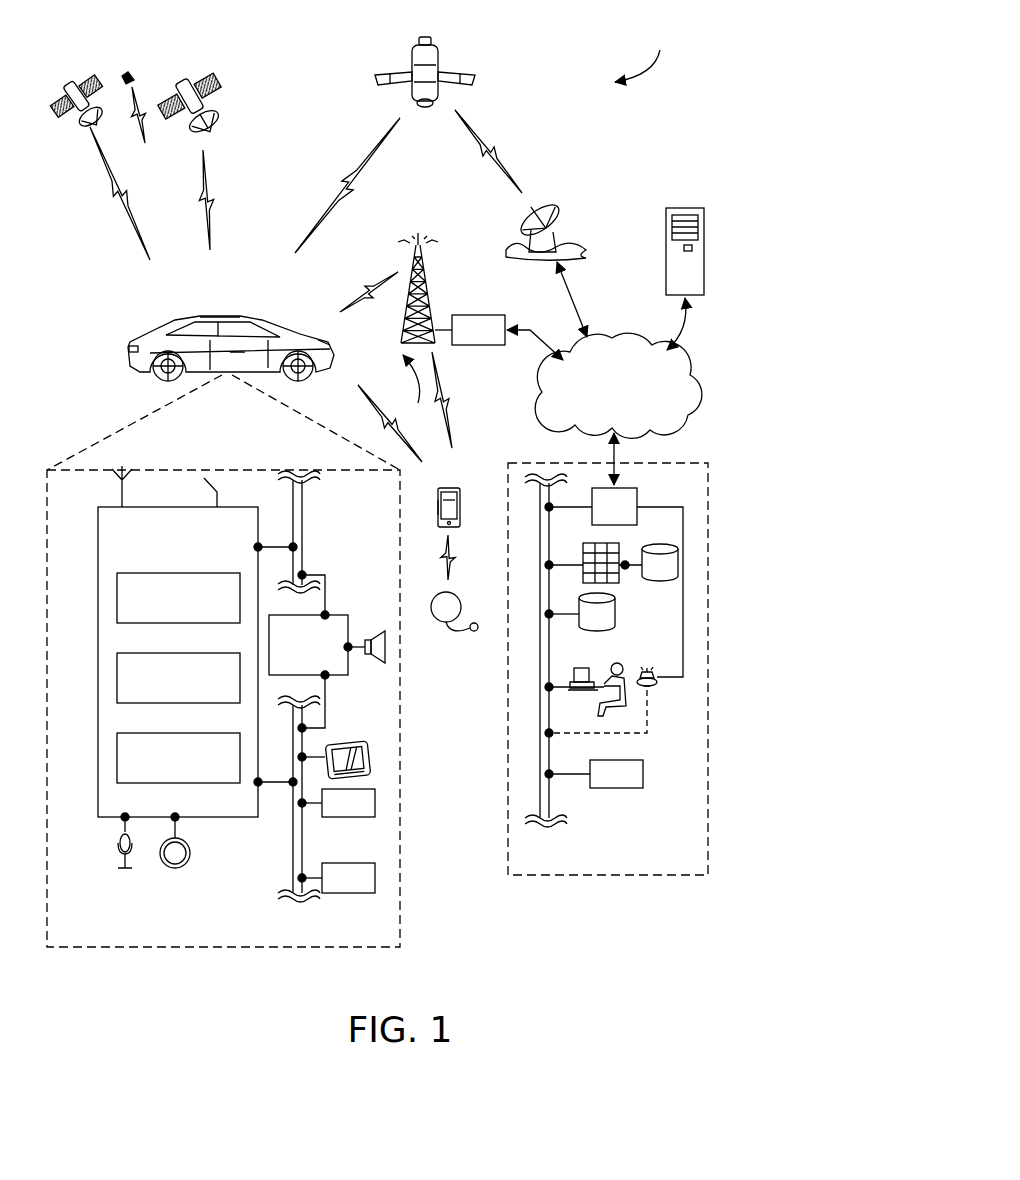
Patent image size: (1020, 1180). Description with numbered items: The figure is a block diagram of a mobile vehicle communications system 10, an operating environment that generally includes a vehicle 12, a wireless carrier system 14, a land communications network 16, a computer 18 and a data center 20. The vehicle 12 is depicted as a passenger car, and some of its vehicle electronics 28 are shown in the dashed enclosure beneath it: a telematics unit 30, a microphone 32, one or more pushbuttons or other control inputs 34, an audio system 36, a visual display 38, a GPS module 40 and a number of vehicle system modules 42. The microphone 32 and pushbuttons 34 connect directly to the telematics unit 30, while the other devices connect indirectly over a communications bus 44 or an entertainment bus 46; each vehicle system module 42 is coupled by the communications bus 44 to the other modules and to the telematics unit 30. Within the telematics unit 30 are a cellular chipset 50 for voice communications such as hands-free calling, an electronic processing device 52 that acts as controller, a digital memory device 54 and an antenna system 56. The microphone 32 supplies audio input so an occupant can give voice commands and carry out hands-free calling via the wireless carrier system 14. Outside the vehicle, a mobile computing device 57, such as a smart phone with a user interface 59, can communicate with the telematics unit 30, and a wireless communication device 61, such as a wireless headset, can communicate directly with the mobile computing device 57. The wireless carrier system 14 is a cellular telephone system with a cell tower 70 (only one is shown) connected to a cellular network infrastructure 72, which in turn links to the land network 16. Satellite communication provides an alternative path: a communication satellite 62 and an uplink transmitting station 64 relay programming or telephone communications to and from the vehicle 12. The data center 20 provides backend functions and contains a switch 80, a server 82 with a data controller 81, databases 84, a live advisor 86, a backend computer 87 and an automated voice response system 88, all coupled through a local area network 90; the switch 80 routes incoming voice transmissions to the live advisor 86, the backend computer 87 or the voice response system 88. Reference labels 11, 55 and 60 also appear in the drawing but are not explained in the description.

The mobile vehicle communications system 10 is at (647, 50).
The vehicle roof 11 is at (226, 318).
The vehicle 12 is at (126, 353).
The wireless carrier system 14 is at (416, 392).
The land communications network 16 is at (692, 388).
The computer 18 is at (705, 265).
The data center 20 is at (598, 875).
The vehicle electronics 28 is at (213, 947).
The telematics unit 30 is at (217, 478).
The microphone 32 is at (118, 848).
The pushbuttons or other control inputs 34 is at (191, 853).
The audio system 36 is at (330, 612).
The visual display 38 is at (358, 740).
The GPS module 40 is at (376, 803).
The vehicle system modules 42 is at (376, 878).
The communications bus 44 is at (291, 862).
The entertainment bus 46 is at (303, 530).
The cellular chipset 50 is at (117, 597).
The electronic processing device 52 is at (117, 677).
The digital memory device 54 is at (117, 755).
The mobile device 55 is at (455, 487).
The antenna system 56 is at (118, 492).
The mobile computing device 57 is at (436, 512).
The user interface 59 is at (454, 510).
The GPS satellites 60 is at (248, 108).
The wireless communication device 61 is at (444, 622).
The communication satellite 62 is at (440, 55).
The uplink transmitting station 64 is at (560, 250).
The cell tower 70 is at (432, 280).
The cellular network infrastructure 72 is at (478, 347).
The switch 80 is at (616, 582).
The data controller 81 is at (660, 545).
The server 82 is at (580, 550).
The database 84 is at (616, 614).
The live advisor 86 is at (600, 713).
The backend computer 87 is at (582, 668).
The automated voice response system 88 is at (643, 773).
The local area network 90 is at (549, 800).